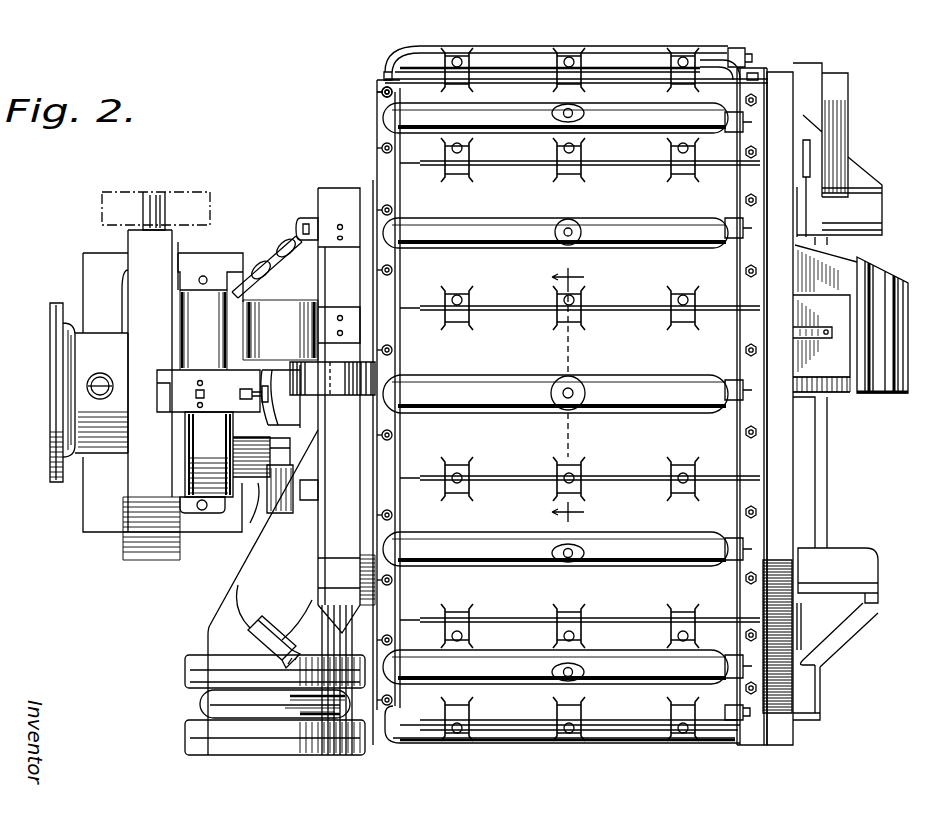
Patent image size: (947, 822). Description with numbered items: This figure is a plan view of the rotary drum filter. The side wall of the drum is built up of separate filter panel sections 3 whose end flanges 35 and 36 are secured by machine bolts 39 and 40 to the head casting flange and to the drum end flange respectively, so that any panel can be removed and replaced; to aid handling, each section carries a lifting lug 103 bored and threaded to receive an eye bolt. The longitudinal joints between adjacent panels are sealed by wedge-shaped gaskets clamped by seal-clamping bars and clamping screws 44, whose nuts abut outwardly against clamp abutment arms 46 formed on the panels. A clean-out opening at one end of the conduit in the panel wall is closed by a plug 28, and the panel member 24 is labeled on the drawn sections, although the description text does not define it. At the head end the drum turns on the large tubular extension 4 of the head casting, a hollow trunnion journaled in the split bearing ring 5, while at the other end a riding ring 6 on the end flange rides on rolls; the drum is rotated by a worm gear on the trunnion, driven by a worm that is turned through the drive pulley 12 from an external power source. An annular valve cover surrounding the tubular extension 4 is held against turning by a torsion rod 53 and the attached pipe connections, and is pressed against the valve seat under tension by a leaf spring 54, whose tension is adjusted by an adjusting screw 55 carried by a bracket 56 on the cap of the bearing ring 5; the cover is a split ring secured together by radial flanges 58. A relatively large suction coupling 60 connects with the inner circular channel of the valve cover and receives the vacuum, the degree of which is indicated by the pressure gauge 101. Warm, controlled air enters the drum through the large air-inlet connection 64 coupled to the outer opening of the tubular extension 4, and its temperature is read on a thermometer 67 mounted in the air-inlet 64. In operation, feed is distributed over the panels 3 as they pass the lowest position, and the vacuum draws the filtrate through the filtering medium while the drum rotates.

The filter panel section 3 is at (722, 48).
The tubular extension 4 is at (250, 515).
The split bearing ring 5 is at (196, 540).
The riding ring 6 is at (778, 158).
The drive pulley 12 is at (168, 200).
The transverse tube 24 is at (616, 386).
The plug 28 is at (753, 58).
The end flange 35 is at (384, 92).
The end flange 36 is at (752, 226).
The machine bolt 39 is at (381, 142).
The machine bolt 40 is at (754, 150).
The clamping screw 44 is at (466, 474).
The clamp abutment arm 46 is at (690, 488).
The torsion rod 53 is at (284, 244).
The leaf spring 54 is at (242, 398).
The adjusting screw 55 is at (205, 383).
The bracket 56 is at (190, 383).
The radial flange 58 is at (312, 380).
The suction coupling 60 is at (215, 731).
The air-inlet connection 64 is at (52, 390).
The thermometer 67 is at (106, 374).
The pressure gauge 101 is at (250, 640).
The lifting lug 103 is at (576, 226).